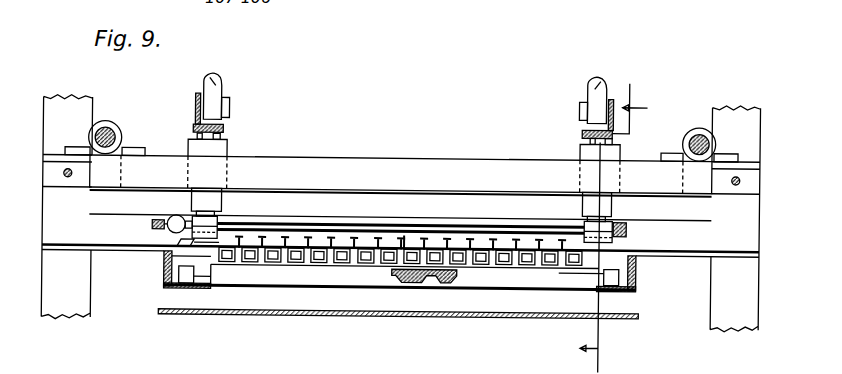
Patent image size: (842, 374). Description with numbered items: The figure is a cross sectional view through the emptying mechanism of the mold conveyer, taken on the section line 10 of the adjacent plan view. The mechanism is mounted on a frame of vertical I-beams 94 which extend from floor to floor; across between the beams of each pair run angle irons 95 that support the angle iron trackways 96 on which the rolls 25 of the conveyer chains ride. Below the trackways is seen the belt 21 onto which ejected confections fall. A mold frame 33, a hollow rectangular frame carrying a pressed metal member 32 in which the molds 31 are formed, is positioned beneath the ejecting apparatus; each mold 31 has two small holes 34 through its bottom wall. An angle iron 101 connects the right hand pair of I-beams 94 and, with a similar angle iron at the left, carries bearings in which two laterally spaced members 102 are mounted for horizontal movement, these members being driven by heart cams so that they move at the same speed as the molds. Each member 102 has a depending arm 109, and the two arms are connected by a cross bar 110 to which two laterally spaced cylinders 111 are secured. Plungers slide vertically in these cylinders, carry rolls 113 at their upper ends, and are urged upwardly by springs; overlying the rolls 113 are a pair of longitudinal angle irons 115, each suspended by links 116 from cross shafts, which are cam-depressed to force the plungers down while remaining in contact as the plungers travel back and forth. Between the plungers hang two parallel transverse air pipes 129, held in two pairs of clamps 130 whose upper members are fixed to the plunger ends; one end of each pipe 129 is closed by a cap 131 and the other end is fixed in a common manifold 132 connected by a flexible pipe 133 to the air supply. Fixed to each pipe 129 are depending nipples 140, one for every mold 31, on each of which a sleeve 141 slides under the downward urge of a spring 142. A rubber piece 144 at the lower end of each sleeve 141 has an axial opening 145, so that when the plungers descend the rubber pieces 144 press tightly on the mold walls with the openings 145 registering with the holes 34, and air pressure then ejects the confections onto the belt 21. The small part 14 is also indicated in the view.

The section line 10 is at (620, 227).
The plate 14 is at (198, 242).
The belt 21 is at (375, 314).
The rolls 25 is at (185, 282).
The molds 31 is at (432, 279).
The pressed metal member 32 is at (456, 272).
The hollow rectangular frame 33 is at (565, 270).
The holes 34 is at (415, 279).
The vertical I-beams 94 is at (738, 88).
The angle irons 95 is at (110, 252).
The angle iron trackways 96 is at (168, 288).
The angle iron 101 is at (50, 173).
The laterally-spaced members 102 is at (108, 124).
The depending arm 109 is at (125, 146).
The cross bar 110 is at (401, 176).
The cylinders 111 is at (228, 147).
The rolls 113 is at (207, 143).
The angle irons 115 is at (195, 100).
The links 116 is at (218, 79).
The pipes 129 is at (465, 219).
The clamps 130 is at (222, 217).
The cap 131 is at (628, 228).
The manifold 132 is at (170, 216).
The flexible pipe 133 is at (150, 228).
The nipples 140 is at (362, 231).
The sleeve 141 is at (405, 237).
The spring 142 is at (512, 234).
The rubber piece 144 is at (343, 264).
The axial opening 145 is at (326, 263).